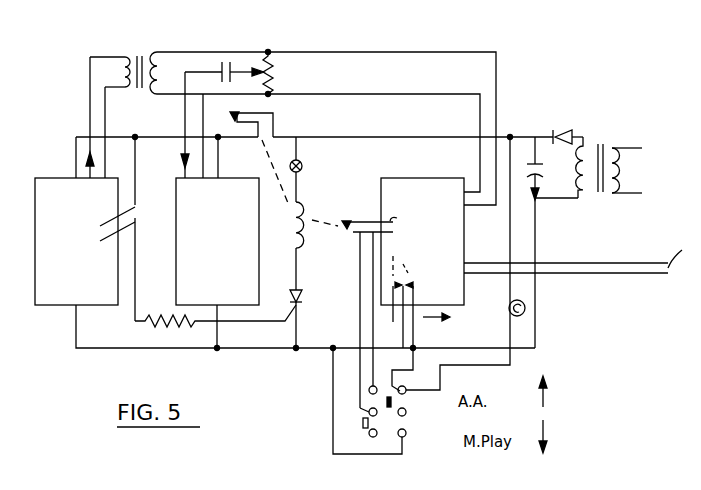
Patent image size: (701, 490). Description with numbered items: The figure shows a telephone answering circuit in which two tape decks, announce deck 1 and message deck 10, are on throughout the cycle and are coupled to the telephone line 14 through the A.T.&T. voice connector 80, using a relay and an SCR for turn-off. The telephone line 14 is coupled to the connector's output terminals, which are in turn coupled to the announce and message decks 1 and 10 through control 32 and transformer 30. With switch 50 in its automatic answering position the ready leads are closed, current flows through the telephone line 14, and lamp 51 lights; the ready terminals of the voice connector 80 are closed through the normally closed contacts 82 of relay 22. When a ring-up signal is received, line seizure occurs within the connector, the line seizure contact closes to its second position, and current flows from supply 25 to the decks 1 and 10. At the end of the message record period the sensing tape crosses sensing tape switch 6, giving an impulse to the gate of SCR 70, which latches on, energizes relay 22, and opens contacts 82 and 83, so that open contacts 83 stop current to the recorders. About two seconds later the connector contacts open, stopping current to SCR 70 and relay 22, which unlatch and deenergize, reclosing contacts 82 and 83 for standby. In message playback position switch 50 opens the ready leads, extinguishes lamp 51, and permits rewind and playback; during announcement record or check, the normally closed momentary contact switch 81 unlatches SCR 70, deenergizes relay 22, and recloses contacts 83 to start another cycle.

The announce deck 1 is at (45, 177).
The sensing tape switch 6 is at (101, 222).
The message deck 10 is at (231, 177).
The telephone line 14 is at (573, 258).
The relay 22 is at (298, 229).
The supply 25 is at (565, 162).
The transformer 30 is at (140, 55).
The control 32 is at (276, 66).
The switch 50 is at (410, 418).
The lamp 51 is at (526, 307).
The SCR 70 is at (303, 294).
The voice connector 80 is at (381, 177).
The momentary contact switch 81 is at (303, 169).
The relay contacts 82 is at (343, 220).
The relay contacts 83 is at (290, 124).